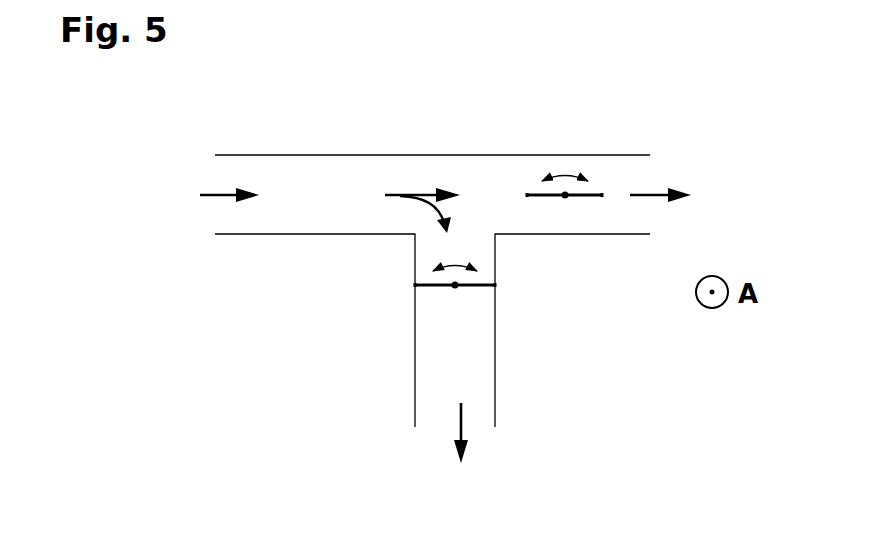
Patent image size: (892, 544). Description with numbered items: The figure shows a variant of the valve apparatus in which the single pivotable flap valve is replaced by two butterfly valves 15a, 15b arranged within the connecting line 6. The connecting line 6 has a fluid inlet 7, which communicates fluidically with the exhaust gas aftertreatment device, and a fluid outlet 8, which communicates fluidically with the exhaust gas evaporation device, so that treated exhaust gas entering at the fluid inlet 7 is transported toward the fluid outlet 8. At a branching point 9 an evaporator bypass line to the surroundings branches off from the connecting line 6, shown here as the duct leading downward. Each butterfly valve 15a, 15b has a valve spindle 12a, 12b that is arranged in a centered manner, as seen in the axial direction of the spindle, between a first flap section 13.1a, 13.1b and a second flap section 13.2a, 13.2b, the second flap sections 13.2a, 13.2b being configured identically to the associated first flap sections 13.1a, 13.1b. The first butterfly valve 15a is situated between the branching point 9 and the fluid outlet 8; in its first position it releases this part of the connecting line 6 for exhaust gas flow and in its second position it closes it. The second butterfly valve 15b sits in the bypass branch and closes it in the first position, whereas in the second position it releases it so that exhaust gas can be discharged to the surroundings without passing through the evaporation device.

The connecting line 6 is at (316, 86).
The fluid inlet 7 is at (198, 175).
The fluid outlet 8 is at (665, 172).
The branching point 9 is at (451, 166).
The valve spindle 12a is at (565, 200).
The valve spindle 12b is at (454, 290).
The first flap section 13.1a is at (530, 180).
The second flap section 13.2a is at (601, 180).
The first flap section 13.1b is at (426, 300).
The second flap section 13.2b is at (496, 297).
The first butterfly valve 15a is at (582, 215).
The second butterfly valve 15b is at (476, 308).